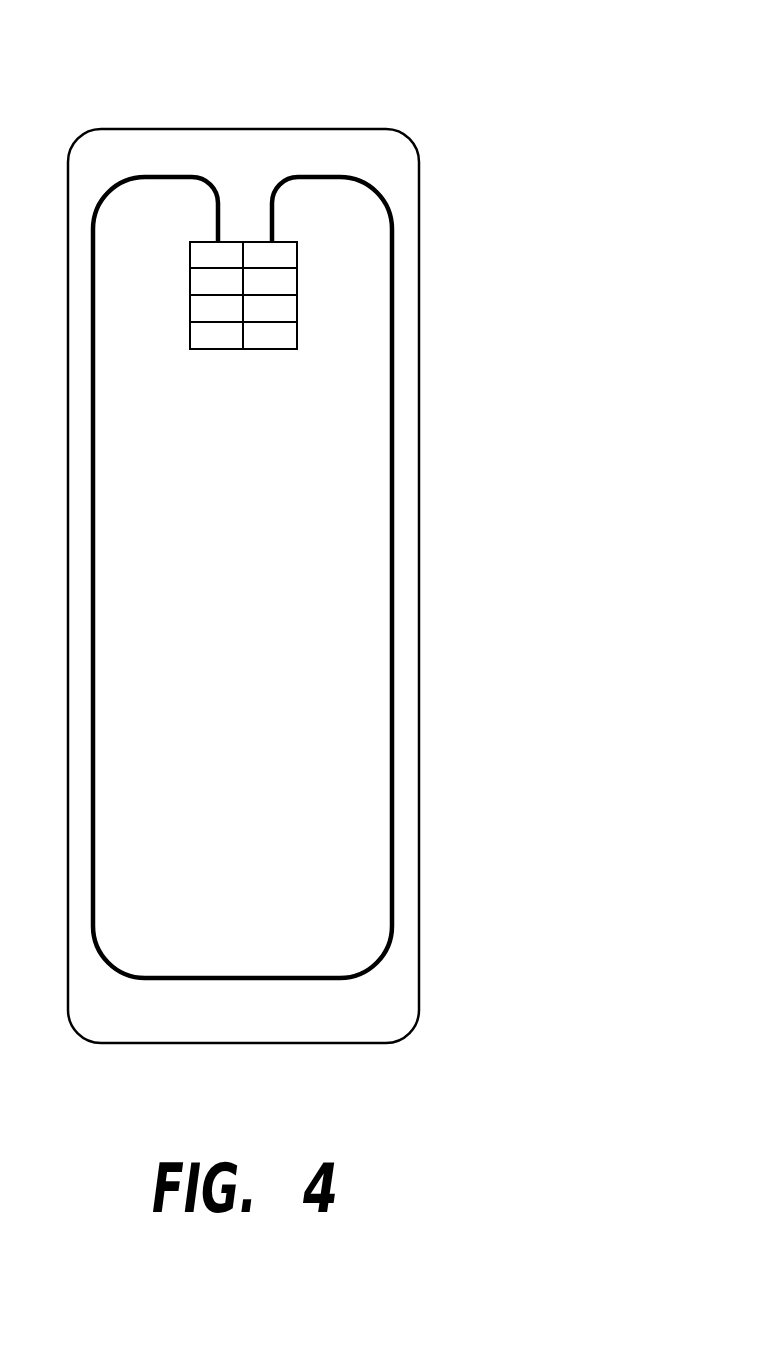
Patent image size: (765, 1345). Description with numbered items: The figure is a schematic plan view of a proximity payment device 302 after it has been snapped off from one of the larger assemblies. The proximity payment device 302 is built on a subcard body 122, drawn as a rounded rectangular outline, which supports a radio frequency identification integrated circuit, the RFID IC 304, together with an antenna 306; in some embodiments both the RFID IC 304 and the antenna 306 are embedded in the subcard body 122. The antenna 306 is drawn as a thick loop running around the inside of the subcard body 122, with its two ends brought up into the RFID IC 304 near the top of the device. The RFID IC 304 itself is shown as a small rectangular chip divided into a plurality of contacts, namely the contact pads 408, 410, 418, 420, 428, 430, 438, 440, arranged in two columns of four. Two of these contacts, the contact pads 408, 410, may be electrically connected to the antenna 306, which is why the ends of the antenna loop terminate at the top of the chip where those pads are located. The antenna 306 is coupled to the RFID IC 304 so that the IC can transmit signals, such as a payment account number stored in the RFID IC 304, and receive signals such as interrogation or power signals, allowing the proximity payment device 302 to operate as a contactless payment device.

The subcard body 122 is at (246, 157).
The proximity payment device 302 is at (472, 108).
The RFID integrated circuit 304 is at (213, 349).
The antenna 306 is at (396, 436).
The contact pad 408 is at (203, 255).
The contact pad 410 is at (287, 255).
The contact pad 418 is at (203, 282).
The contact pad 420 is at (287, 282).
The contact pad 428 is at (203, 307).
The contact pad 430 is at (287, 308).
The contact pad 438 is at (203, 335).
The contact pad 440 is at (287, 335).